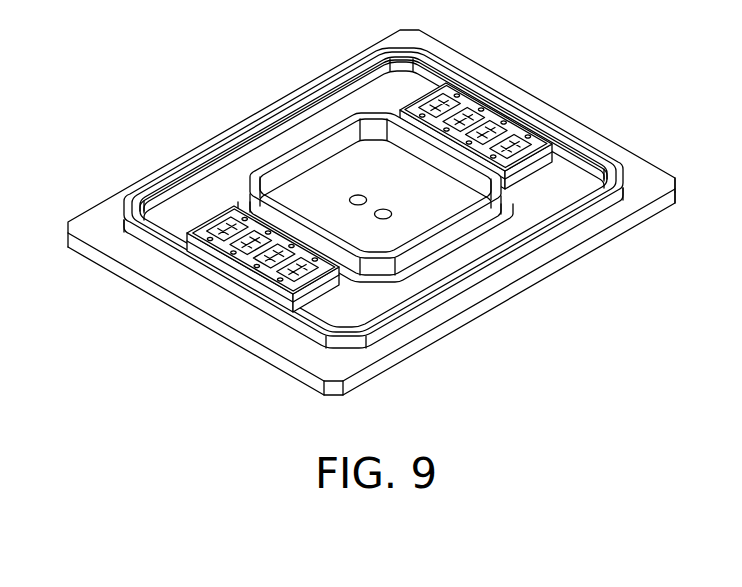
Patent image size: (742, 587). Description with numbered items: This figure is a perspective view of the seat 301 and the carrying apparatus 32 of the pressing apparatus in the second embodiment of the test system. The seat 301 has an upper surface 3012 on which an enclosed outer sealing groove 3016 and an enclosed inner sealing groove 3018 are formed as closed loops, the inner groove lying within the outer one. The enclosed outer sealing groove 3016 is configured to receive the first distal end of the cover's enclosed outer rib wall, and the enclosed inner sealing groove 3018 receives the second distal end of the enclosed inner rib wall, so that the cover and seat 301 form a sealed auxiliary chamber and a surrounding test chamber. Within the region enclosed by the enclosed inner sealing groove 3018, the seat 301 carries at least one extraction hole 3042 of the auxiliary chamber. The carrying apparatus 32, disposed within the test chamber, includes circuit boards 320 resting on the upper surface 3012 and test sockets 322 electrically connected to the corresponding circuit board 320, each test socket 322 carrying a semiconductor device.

The seat 301 is at (640, 190).
The enclosed outer sealing groove 3016 is at (133, 196).
The enclosed inner sealing groove 3018 is at (245, 188).
The upper surface 3012 is at (332, 303).
The extraction hole 3042 is at (389, 216).
The carrying apparatus 32 is at (536, 94).
The circuit board 320 is at (562, 157).
The test socket 322 is at (498, 106).